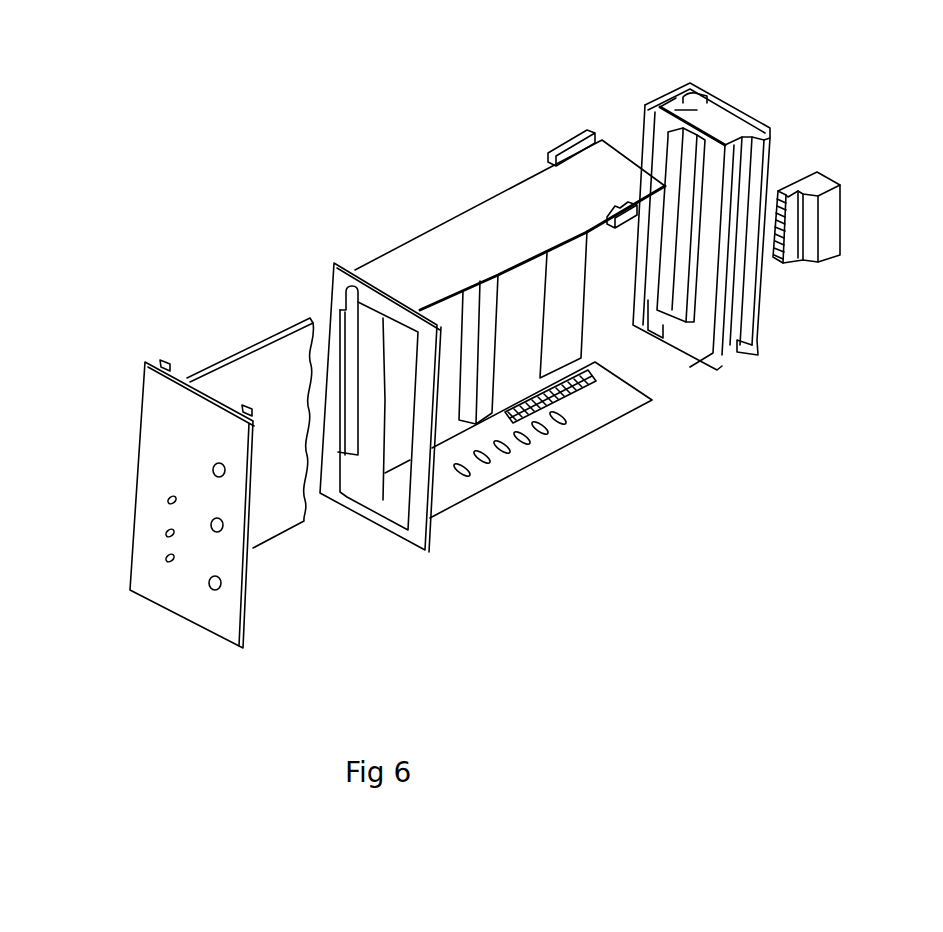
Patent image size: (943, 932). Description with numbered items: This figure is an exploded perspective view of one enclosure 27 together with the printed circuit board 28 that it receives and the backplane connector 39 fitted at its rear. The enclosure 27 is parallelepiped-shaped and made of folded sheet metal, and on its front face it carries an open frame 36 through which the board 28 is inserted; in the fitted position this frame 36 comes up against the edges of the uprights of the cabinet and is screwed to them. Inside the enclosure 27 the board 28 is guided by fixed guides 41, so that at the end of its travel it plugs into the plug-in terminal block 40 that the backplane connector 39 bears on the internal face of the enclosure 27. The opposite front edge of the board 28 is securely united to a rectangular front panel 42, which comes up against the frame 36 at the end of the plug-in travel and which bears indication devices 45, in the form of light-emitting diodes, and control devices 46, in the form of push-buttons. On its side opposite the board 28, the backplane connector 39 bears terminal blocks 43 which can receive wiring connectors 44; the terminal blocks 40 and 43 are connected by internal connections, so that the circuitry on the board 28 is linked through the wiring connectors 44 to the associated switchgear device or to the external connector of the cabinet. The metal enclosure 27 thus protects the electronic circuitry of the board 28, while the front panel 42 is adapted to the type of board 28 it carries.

The enclosure 27 is at (528, 199).
The printed circuit board 28 is at (242, 383).
The frame 36 is at (367, 512).
The backplane connector 39 is at (724, 197).
The plug-in terminal block 40 is at (662, 328).
The fixed guides 41 is at (587, 377).
The front panel 42 is at (163, 415).
The terminal blocks 43 is at (697, 110).
The wiring connectors 44 is at (820, 255).
The indication devices 45 is at (170, 533).
The control devices 46 is at (214, 583).